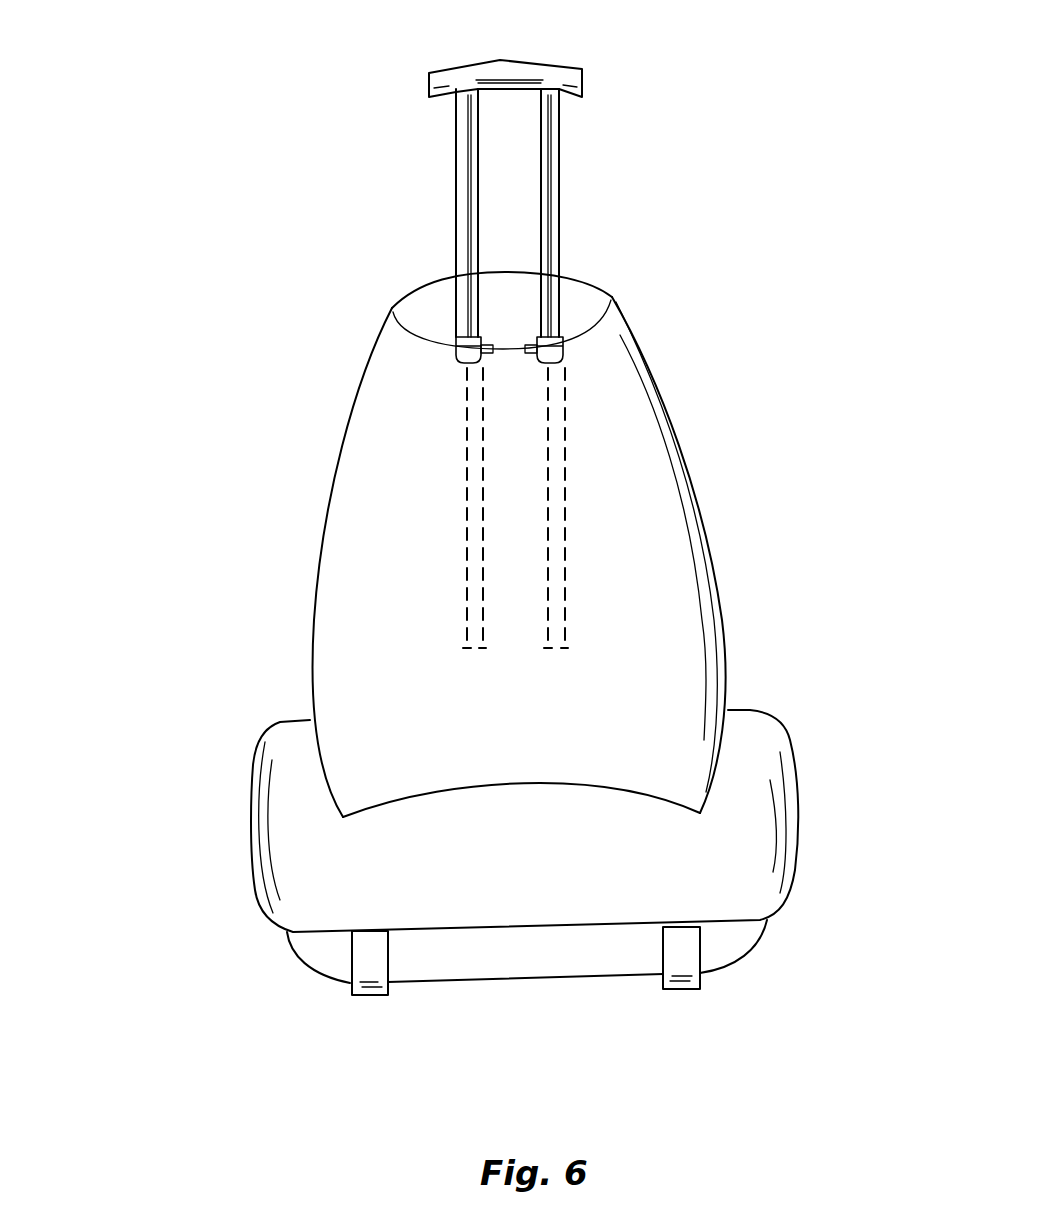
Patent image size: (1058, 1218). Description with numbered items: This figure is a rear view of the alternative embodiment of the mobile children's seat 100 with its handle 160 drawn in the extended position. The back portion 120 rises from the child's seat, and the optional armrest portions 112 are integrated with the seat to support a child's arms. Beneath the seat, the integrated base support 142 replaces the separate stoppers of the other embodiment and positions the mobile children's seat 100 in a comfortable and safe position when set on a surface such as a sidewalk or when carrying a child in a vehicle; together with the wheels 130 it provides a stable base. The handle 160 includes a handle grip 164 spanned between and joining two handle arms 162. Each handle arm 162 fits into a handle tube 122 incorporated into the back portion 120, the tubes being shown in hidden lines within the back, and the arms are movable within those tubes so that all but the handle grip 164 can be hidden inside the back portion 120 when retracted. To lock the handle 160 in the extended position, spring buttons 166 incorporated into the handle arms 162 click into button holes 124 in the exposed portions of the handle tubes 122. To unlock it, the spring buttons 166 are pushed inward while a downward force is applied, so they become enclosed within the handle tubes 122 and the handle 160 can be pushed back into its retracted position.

The mobile children's seat 100 is at (175, 364).
The armrest portions 112 is at (758, 737).
The back portion 120 is at (680, 562).
The handle tubes 122 is at (487, 493).
The button holes 124 is at (457, 350).
The wheels 130 is at (367, 953).
The integrated base support 142 is at (737, 942).
The handle 160 is at (438, 157).
The handle arms 162 is at (465, 165).
The handle grip 164 is at (567, 72).
The spring buttons 166 is at (533, 353).